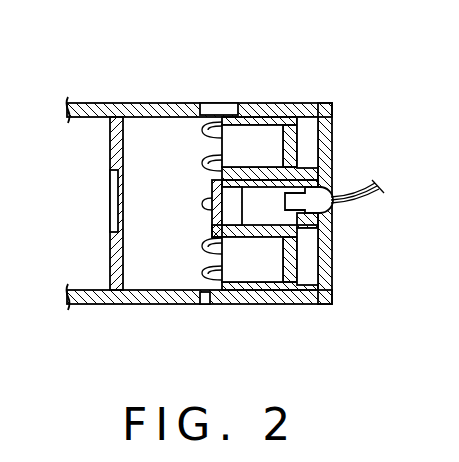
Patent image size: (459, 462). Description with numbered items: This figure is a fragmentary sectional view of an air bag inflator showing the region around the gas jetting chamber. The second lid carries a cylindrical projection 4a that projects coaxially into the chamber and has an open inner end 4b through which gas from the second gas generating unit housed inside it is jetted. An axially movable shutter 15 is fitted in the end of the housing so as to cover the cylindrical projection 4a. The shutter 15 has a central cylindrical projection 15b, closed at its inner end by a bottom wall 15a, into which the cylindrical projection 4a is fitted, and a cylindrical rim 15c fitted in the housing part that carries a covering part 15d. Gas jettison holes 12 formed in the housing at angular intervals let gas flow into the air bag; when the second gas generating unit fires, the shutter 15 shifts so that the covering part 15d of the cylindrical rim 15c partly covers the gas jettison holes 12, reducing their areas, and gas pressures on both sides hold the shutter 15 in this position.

The cylindrical projection 4a is at (318, 237).
The open inner end 4b is at (225, 183).
The gas jettison holes 12 is at (222, 136).
The axially movable shutter 15 is at (272, 275).
The bottom wall 15a is at (212, 231).
The central cylindrical projection 15b is at (243, 165).
The cylindrical rim 15c is at (278, 103).
The covering part 15d is at (195, 116).